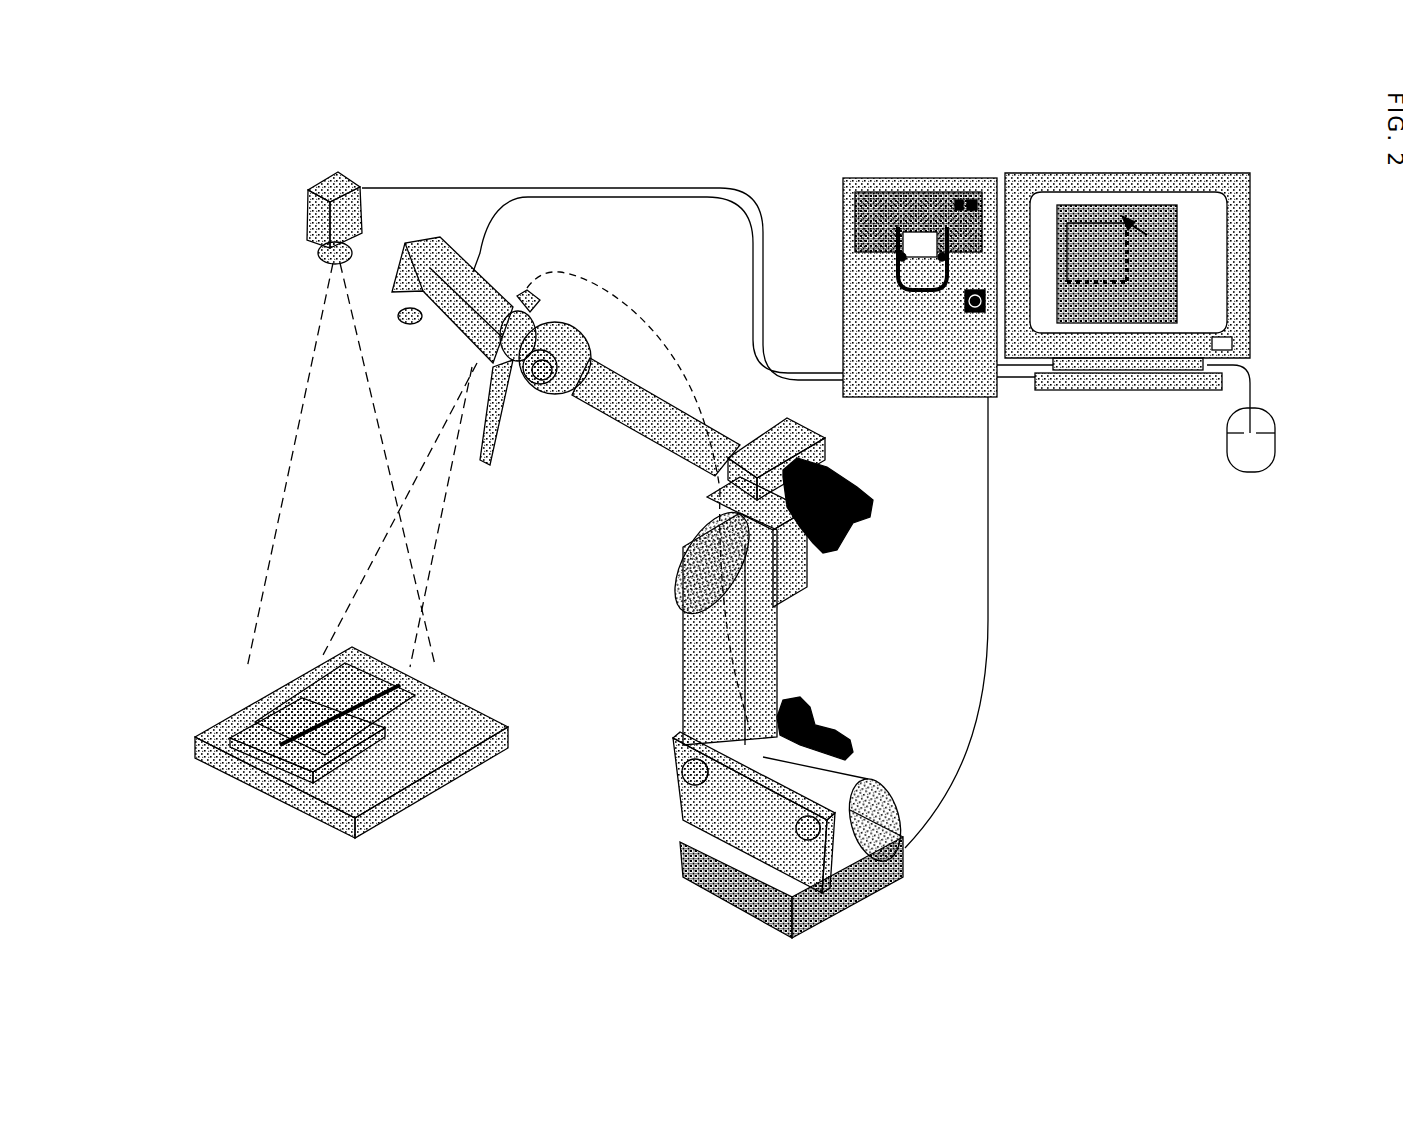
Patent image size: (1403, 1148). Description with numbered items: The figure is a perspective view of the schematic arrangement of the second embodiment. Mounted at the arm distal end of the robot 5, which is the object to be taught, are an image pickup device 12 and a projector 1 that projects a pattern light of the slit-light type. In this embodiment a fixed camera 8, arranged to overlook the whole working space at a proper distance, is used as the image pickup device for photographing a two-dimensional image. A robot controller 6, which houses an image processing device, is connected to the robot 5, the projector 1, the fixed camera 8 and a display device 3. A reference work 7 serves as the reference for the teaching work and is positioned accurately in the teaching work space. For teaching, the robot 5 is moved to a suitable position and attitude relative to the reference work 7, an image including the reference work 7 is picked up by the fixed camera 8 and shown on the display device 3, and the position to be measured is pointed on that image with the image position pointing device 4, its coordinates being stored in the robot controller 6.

The projector 1 is at (493, 277).
The display device 3 is at (1237, 182).
The image position pointing device 4 is at (1258, 422).
The robot 5 is at (867, 770).
The robot controller 6 is at (990, 177).
The reference work 7 is at (453, 713).
The fixed camera 8 is at (343, 182).
The image pickup device 12 is at (413, 243).